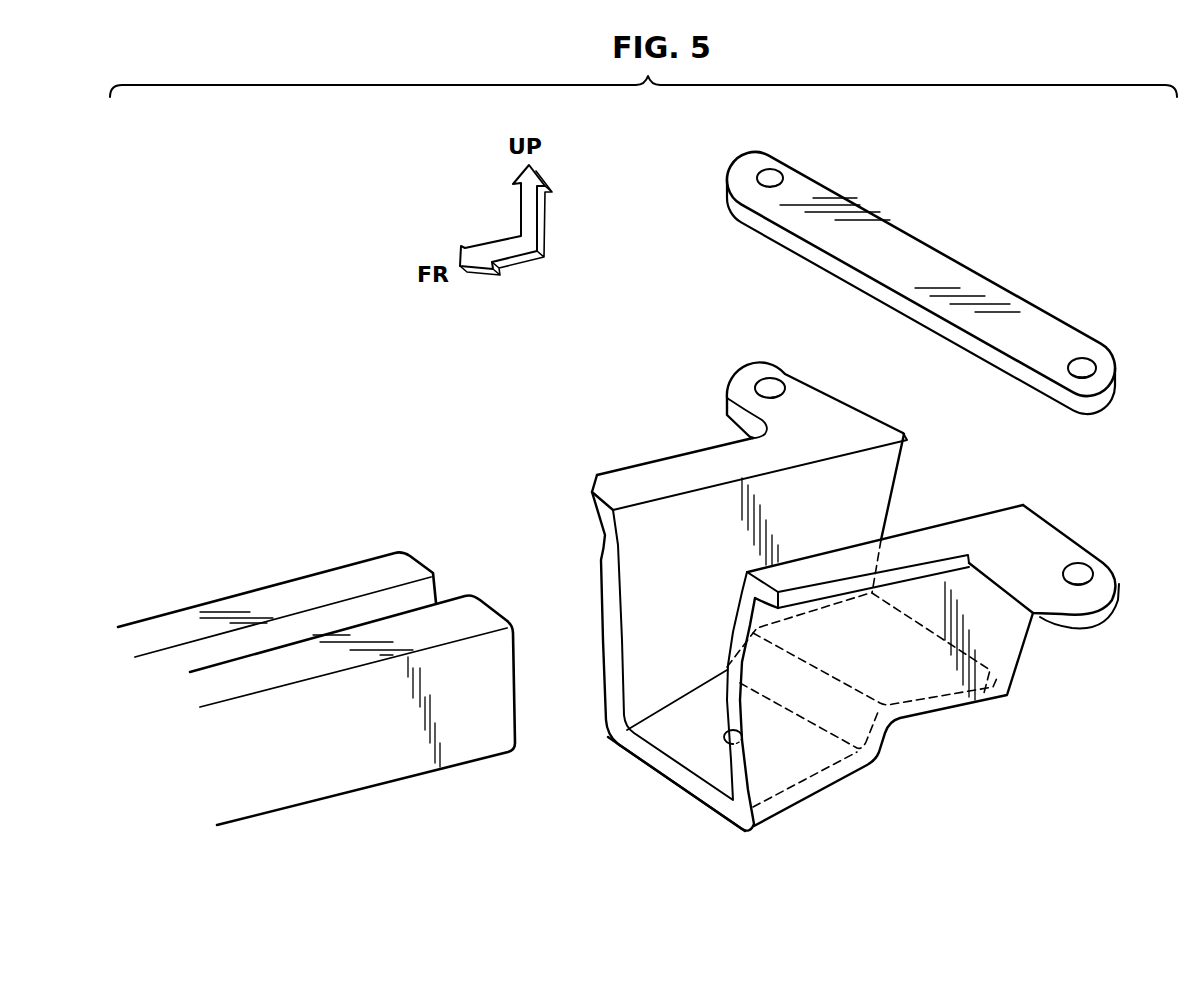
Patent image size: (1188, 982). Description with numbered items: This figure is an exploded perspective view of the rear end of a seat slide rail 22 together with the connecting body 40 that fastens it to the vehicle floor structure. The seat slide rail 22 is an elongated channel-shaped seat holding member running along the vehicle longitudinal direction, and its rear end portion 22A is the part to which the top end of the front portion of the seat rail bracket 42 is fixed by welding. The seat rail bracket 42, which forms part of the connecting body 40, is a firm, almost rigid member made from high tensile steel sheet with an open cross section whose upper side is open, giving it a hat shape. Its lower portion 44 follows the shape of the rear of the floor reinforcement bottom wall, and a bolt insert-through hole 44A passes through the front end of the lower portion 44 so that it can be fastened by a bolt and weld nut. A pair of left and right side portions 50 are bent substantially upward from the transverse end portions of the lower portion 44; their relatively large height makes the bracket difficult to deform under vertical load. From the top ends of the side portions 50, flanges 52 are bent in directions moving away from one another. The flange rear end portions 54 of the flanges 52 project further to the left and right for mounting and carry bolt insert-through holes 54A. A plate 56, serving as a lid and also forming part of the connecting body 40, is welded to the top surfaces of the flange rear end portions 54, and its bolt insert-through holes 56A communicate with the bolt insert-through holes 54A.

The seat slide rail 22 is at (327, 548).
The rear end portion of the seat slide rail 22A is at (505, 695).
The connecting body 40 is at (1004, 228).
The seat rail bracket 42 is at (622, 405).
The lower portion 44 is at (718, 768).
The bolt insert-through hole 44A is at (731, 737).
The side portions 50 is at (650, 556).
The flanges 52 is at (691, 463).
The flange rear end portions 54 is at (812, 390).
The bolt insert-through holes 54A is at (767, 386).
The plate 56 is at (890, 237).
The bolt insert-through holes 56A is at (772, 176).